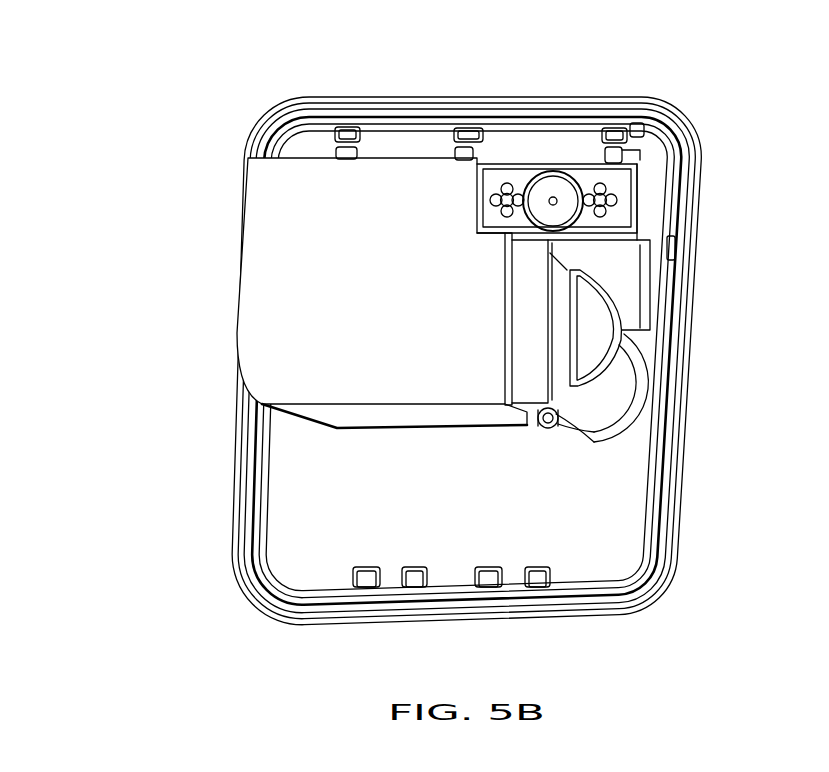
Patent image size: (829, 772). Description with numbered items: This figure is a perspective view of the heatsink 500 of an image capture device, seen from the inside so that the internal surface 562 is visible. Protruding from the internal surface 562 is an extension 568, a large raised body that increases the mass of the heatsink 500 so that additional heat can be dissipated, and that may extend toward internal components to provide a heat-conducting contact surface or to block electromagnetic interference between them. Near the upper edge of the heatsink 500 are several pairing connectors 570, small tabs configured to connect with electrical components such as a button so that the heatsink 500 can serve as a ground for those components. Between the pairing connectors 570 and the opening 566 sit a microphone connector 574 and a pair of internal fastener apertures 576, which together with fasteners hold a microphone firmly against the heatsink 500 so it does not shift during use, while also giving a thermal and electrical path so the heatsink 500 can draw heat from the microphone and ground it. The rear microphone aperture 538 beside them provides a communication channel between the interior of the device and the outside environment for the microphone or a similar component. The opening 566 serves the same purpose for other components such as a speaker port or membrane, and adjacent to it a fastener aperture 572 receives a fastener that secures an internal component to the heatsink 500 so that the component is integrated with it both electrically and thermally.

The heatsink 500 is at (96, 182).
The rear microphone aperture 538 is at (565, 173).
The internal surface 562 is at (307, 493).
The opening 566 is at (623, 337).
The extension 568 is at (365, 336).
The pairing connectors 570 is at (340, 154).
The fastener aperture 572 is at (557, 424).
The microphone connector 574 is at (553, 200).
The internal fastener apertures 576 is at (508, 180).